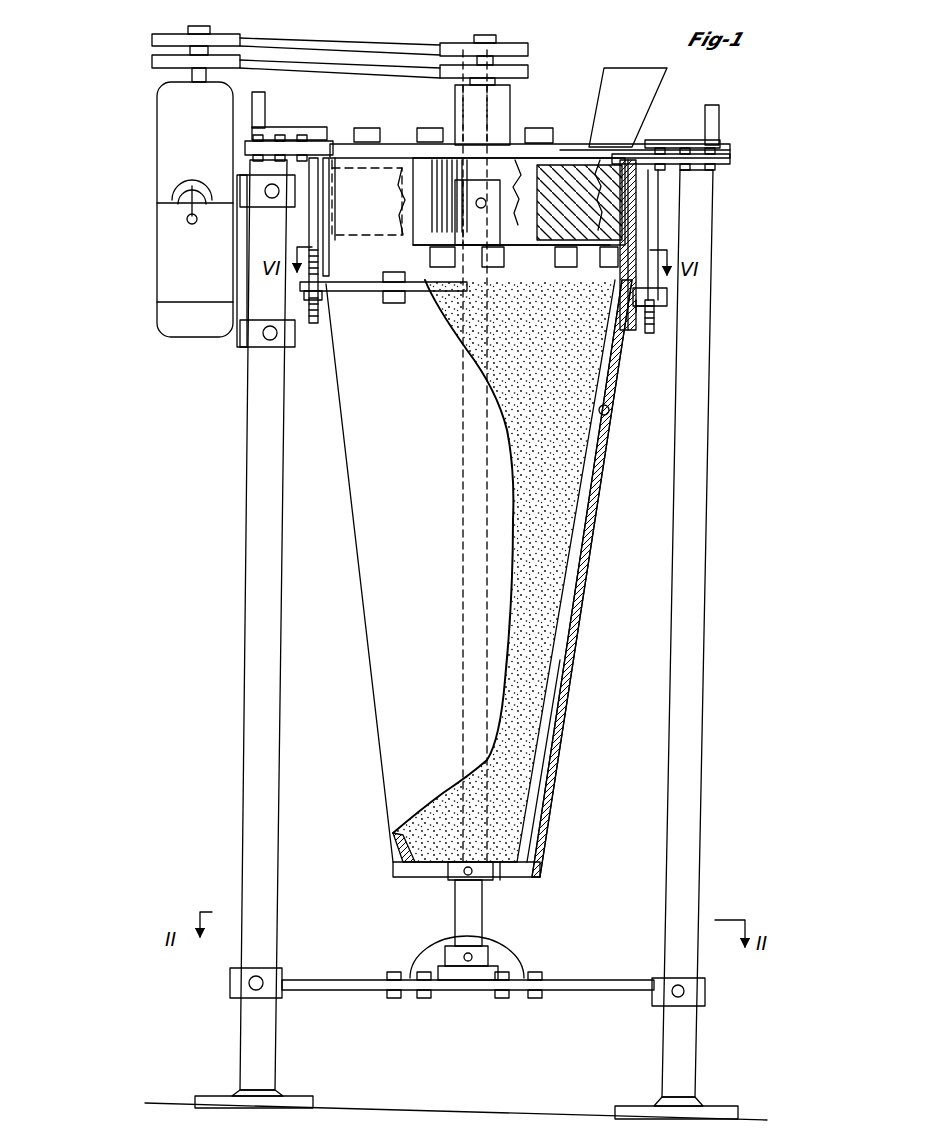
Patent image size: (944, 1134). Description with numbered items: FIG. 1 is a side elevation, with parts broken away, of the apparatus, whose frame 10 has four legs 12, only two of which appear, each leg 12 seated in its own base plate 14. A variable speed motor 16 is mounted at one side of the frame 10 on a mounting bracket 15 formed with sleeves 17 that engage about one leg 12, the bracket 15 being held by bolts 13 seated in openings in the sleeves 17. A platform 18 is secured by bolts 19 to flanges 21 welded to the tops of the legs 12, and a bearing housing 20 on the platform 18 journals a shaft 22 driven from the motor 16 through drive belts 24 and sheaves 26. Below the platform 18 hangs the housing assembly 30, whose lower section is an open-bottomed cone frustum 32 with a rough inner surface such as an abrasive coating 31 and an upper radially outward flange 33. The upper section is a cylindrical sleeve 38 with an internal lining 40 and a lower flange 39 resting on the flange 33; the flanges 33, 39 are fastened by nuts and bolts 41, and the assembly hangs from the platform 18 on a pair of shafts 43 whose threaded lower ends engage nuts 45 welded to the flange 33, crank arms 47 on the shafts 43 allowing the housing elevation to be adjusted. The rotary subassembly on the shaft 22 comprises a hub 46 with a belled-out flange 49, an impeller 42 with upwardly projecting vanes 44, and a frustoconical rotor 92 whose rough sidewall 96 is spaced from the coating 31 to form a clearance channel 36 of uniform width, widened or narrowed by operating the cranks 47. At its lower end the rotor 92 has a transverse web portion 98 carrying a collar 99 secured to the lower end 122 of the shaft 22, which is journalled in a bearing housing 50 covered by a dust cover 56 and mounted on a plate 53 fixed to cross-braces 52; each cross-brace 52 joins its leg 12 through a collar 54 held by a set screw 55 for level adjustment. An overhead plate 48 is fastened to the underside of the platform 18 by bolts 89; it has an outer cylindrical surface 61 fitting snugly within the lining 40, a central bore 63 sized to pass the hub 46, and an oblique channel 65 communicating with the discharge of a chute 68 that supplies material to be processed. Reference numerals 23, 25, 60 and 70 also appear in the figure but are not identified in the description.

The frame 10 is at (714, 394).
The leg 12 is at (248, 748).
The bolt 13 is at (272, 198).
The base plate 14 is at (272, 1097).
The mounting bracket 15 is at (242, 340).
The variable speed motor 16 is at (162, 140).
The sleeve 17 is at (258, 350).
The platform 18 is at (622, 147).
The bolt 19 is at (722, 147).
The bearing housing 20 is at (512, 105).
The flange 21 is at (732, 162).
The shaft 22 is at (456, 92).
The plate bolt 23 is at (542, 128).
The drive belt 24 is at (332, 42).
The top plate 25 is at (520, 144).
The sheave 26 is at (238, 40).
The housing assembly 30 is at (362, 628).
The abrasive coating 31 is at (609, 410).
The cone frustum 32 is at (586, 609).
The flange 33 is at (655, 318).
The clearance channel 36 is at (583, 560).
The cylindrical sleeve 38 is at (372, 175).
The flange 39 is at (652, 302).
The lining 40 is at (640, 224).
The nuts and bolts 41 is at (398, 305).
The impeller 42 is at (665, 292).
The shaft 43 is at (328, 160).
The vane 44 is at (624, 330).
The nut 45 is at (322, 298).
The hub 46 is at (500, 205).
The crank arm 47 is at (285, 135).
The overhead plate 48 is at (578, 198).
The belled-out flange 49 is at (430, 258).
The bearing housing 50 is at (490, 963).
The cross-brace 52 is at (594, 979).
The plate 53 is at (456, 982).
The collar 54 is at (235, 985).
The set screw 55 is at (262, 982).
The dust cover 56 is at (500, 948).
The threaded rod 60 is at (320, 262).
The outer cylindrical surface 61 is at (333, 162).
The central bore 63 is at (440, 195).
The oblique channel 65 is at (535, 185).
The chute 68 is at (620, 95).
The bottom plate 70 is at (525, 880).
The bolt 89 is at (370, 128).
The rotor 92 is at (572, 522).
The sidewall 96 is at (547, 708).
The transverse web portion 98 is at (500, 878).
The collar 99 is at (452, 892).
The lower end of shaft 122 is at (456, 920).